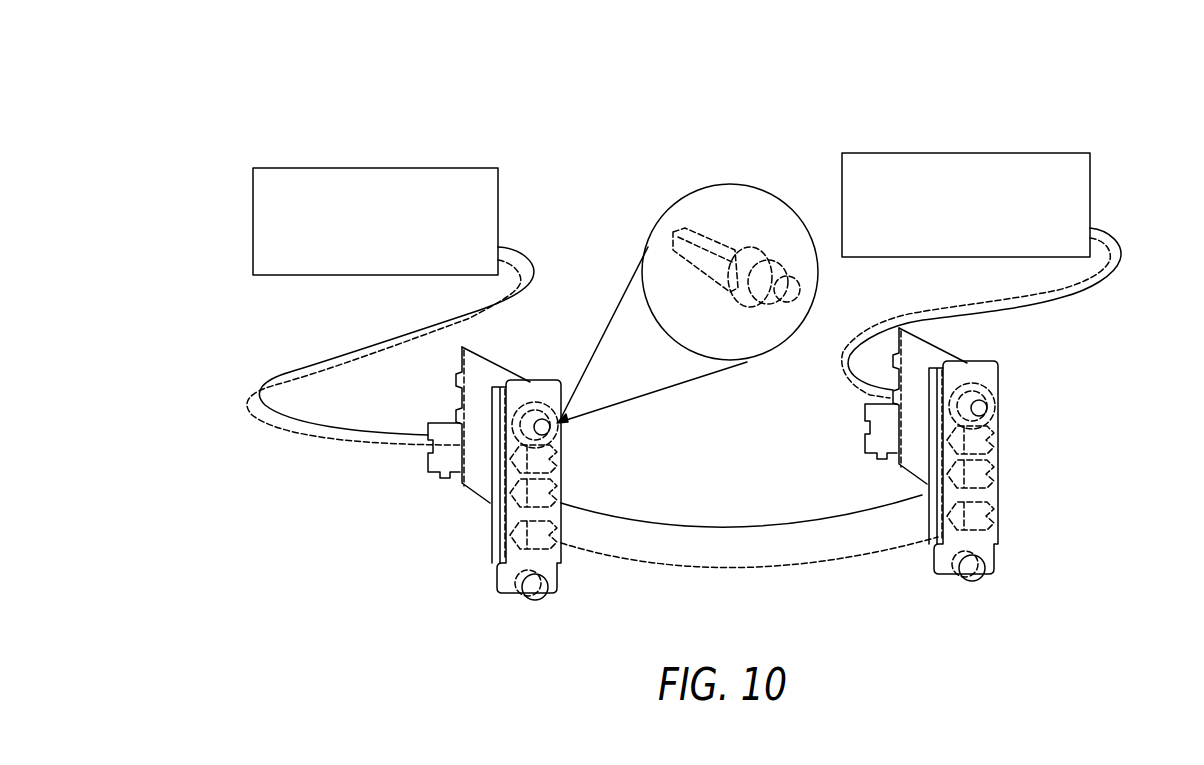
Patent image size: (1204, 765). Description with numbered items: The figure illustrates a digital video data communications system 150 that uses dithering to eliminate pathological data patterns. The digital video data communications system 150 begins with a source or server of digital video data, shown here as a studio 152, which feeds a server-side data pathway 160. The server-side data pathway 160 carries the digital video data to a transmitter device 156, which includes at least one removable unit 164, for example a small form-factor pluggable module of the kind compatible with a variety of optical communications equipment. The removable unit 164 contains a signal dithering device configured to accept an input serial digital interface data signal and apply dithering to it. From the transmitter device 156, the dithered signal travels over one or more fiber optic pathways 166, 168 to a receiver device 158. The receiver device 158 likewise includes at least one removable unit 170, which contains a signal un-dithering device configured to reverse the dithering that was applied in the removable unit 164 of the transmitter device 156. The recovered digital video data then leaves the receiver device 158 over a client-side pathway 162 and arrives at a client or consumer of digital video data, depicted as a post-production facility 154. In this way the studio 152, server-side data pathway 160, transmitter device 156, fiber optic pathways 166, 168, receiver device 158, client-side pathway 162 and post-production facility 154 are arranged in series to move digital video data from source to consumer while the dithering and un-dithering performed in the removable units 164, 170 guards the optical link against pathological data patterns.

The digital video data communications system 150 is at (1067, 87).
The studio 152 is at (262, 215).
The post-production facility 154 is at (1067, 183).
The transmitter device 156 is at (497, 583).
The receiver device 158 is at (997, 560).
The server-side data pathway 160 is at (252, 390).
The client-side pathway 162 is at (1075, 297).
The removable unit 164 is at (752, 256).
The fiber optic pathway 166 is at (698, 528).
The fiber optic pathway 168 is at (707, 567).
The removable unit 170 is at (987, 410).